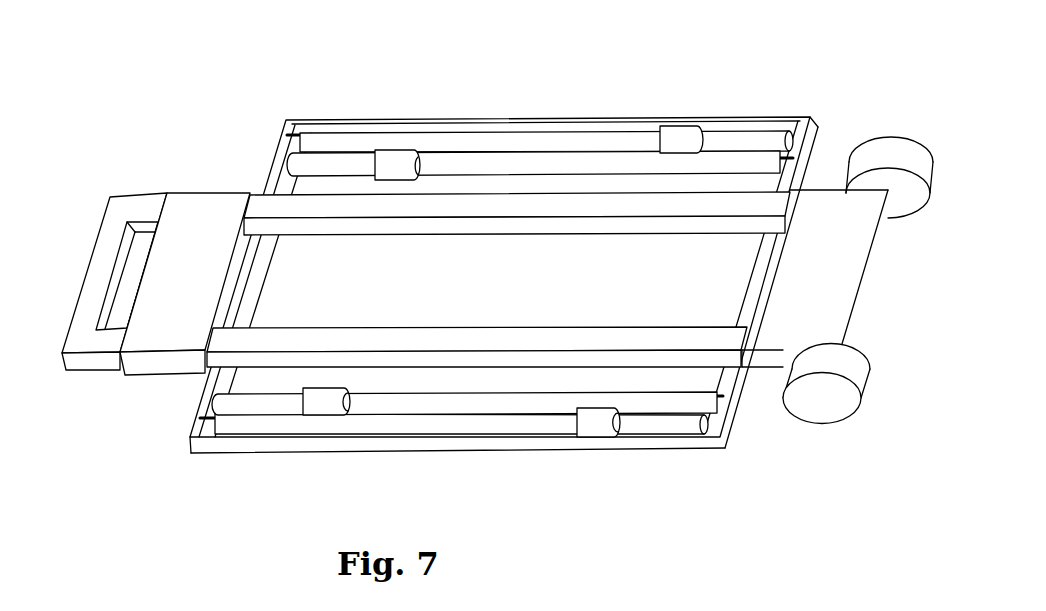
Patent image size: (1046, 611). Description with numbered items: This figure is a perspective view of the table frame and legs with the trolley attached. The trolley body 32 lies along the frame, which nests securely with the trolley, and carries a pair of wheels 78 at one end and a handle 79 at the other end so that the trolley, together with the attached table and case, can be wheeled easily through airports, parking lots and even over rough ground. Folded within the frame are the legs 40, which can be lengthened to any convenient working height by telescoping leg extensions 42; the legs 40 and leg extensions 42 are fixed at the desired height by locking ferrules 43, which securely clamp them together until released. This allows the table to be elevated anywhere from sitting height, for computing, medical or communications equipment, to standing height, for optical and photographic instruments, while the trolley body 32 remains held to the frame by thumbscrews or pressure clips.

The trolley body 32 is at (381, 232).
The legs 40 is at (546, 136).
The leg extensions 42 is at (340, 157).
The locking ferrules 43 is at (403, 152).
The wheels 78 is at (812, 413).
The handle 79 is at (103, 242).